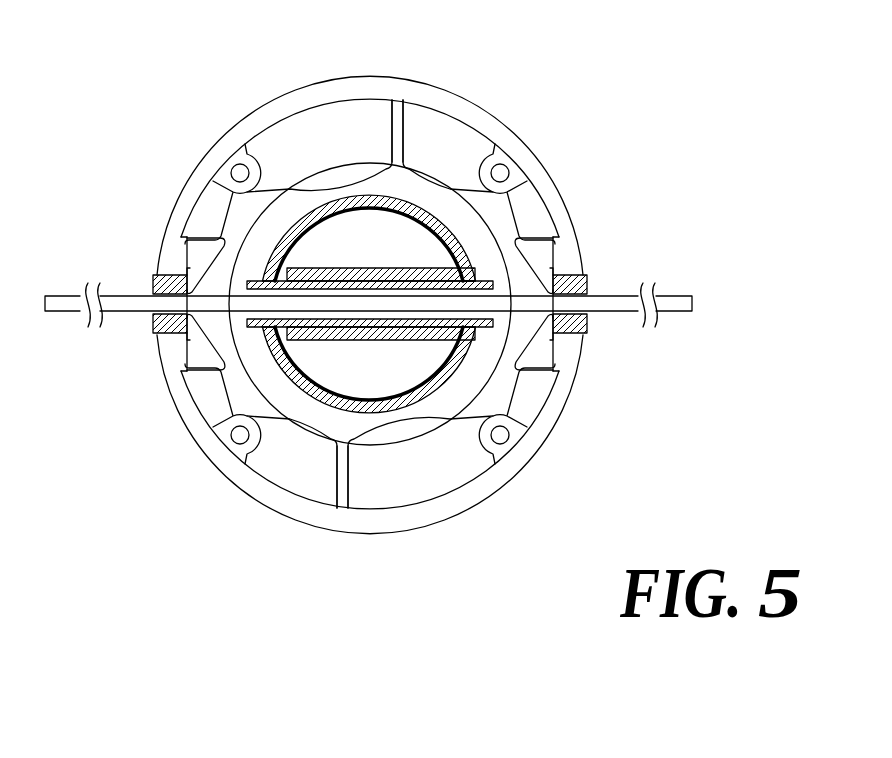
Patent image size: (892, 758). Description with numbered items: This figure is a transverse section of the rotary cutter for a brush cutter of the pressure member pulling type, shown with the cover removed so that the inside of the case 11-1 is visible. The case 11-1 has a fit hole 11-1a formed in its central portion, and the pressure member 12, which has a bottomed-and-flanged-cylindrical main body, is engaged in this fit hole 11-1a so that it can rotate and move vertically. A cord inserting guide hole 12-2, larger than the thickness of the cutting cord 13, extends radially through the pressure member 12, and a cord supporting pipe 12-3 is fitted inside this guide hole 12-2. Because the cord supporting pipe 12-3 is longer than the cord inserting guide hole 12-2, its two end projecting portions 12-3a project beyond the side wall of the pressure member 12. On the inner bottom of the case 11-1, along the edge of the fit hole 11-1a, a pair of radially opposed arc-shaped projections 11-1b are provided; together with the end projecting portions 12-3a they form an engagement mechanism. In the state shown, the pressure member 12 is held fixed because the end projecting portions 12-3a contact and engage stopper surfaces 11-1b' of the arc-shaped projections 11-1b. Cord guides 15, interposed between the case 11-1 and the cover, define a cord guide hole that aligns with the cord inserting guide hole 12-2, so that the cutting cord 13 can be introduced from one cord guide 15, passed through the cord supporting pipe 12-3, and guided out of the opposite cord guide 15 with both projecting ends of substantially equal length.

The case 11-1 is at (216, 152).
The fit hole 11-1a is at (280, 470).
The arc-shaped projections 11-1b is at (362, 304).
The stopper surfaces 11-1b' is at (367, 312).
The pressure member 12 is at (335, 198).
The cord inserting guide hole 12-2 is at (413, 268).
The cord supporting pipe 12-3 is at (413, 322).
The end projecting portions 12-3a is at (262, 277).
The cutting cord 13 is at (118, 296).
The cord guides 15 is at (170, 328).